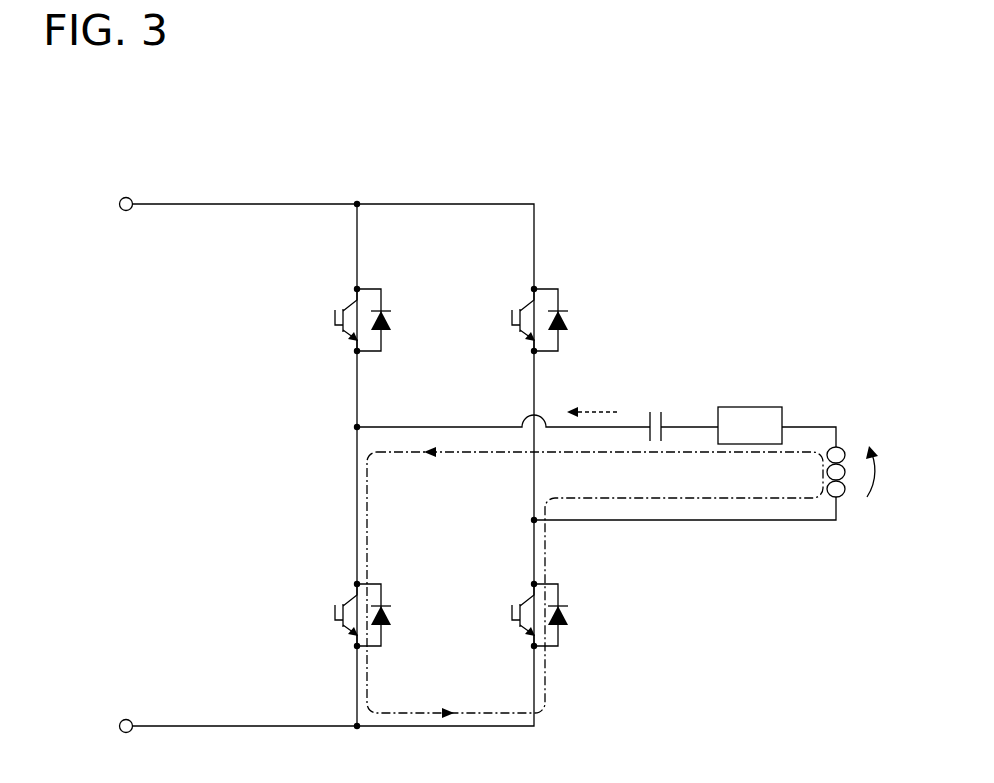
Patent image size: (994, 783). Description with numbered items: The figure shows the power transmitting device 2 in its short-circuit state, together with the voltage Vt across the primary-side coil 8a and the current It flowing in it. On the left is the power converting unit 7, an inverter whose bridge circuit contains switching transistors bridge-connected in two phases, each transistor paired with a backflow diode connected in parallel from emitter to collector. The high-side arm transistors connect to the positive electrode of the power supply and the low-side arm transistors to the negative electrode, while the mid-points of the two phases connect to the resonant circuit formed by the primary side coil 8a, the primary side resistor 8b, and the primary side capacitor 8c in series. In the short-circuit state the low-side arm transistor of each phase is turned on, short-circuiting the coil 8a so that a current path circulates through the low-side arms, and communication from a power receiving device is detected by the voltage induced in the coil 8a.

The power transmitting device 2 is at (716, 170).
The power converting unit 7 is at (464, 204).
The primary side coil 8a is at (843, 448).
The primary side resistor 8b is at (748, 407).
The primary side capacitor 8c is at (662, 415).